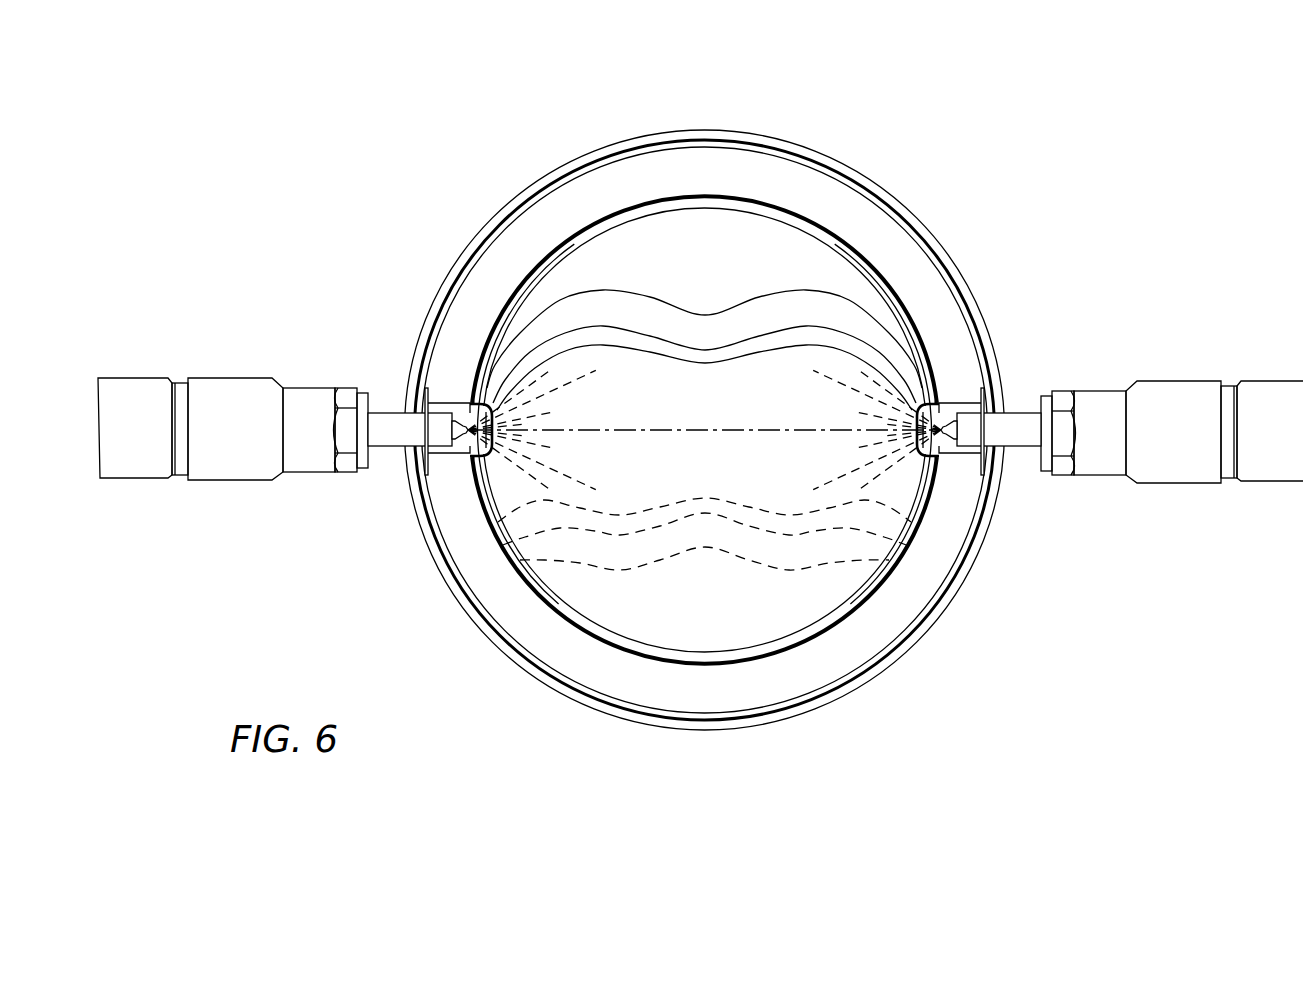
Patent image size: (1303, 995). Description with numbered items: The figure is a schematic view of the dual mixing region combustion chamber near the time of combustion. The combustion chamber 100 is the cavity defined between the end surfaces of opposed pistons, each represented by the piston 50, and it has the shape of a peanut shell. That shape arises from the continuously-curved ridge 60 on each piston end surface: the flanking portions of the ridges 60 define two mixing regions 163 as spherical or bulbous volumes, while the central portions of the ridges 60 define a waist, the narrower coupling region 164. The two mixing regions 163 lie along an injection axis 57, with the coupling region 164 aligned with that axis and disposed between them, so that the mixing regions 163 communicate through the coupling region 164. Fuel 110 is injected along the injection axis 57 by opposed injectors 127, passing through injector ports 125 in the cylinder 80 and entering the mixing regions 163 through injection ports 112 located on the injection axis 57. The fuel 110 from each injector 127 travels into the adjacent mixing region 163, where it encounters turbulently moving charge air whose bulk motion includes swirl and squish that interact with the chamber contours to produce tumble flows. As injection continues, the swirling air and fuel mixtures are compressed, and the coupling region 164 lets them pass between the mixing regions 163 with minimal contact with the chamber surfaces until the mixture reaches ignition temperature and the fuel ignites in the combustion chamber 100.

The piston 50 is at (560, 237).
The injection axis 57 is at (609, 430).
The ridge 60 is at (793, 278).
The cylinder 80 is at (741, 132).
The combustion chamber 100 is at (833, 362).
The fuel 110 is at (527, 463).
The injection port 112 is at (476, 413).
The injector port 125 is at (430, 455).
The injector 127 is at (231, 378).
The mixing region 163 is at (522, 400).
The coupling region 164 is at (688, 412).